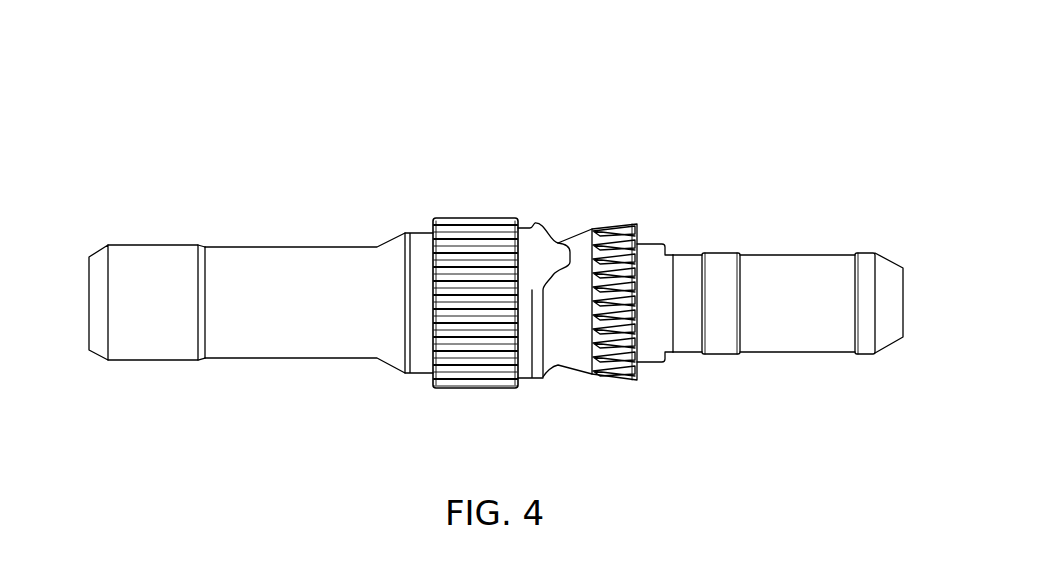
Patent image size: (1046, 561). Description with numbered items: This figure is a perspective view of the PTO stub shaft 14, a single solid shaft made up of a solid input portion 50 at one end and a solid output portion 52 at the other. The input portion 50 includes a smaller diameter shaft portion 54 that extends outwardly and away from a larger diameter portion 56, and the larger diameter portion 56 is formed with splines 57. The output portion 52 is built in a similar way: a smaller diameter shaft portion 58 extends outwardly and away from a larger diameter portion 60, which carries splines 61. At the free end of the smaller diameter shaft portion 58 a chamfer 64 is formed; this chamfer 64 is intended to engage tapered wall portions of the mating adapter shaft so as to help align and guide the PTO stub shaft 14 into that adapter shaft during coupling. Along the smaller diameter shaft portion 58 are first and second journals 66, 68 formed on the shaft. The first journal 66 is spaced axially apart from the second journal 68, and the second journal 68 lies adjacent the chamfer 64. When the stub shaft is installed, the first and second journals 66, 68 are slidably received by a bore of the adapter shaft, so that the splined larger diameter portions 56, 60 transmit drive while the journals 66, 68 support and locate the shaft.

The PTO stub shaft 14 is at (554, 158).
The input portion 50 is at (320, 373).
The output portion 52 is at (740, 378).
The smaller diameter shaft portion 54 is at (259, 358).
The larger diameter portion 56 is at (475, 390).
The splines 57 is at (467, 237).
The smaller diameter shaft portion 58 is at (818, 355).
The larger diameter portion 60 is at (615, 385).
The splines 61 is at (610, 232).
The chamfer 64 is at (890, 258).
The first journal 66 is at (716, 250).
The second journal 68 is at (863, 250).